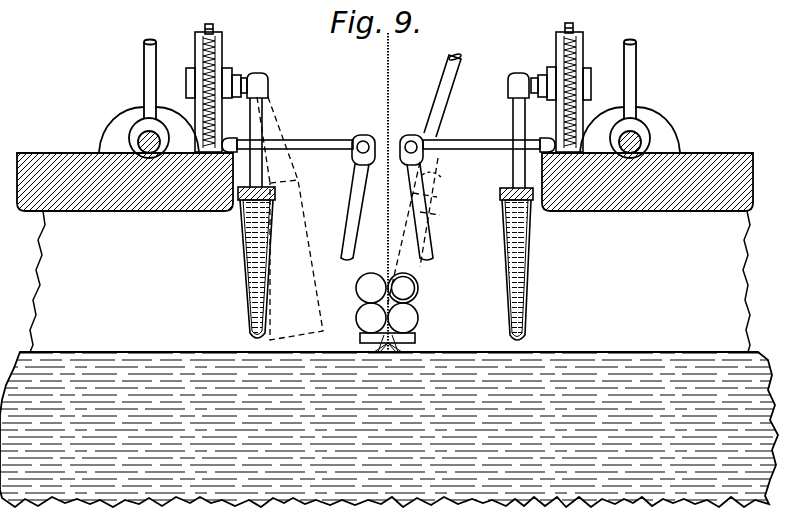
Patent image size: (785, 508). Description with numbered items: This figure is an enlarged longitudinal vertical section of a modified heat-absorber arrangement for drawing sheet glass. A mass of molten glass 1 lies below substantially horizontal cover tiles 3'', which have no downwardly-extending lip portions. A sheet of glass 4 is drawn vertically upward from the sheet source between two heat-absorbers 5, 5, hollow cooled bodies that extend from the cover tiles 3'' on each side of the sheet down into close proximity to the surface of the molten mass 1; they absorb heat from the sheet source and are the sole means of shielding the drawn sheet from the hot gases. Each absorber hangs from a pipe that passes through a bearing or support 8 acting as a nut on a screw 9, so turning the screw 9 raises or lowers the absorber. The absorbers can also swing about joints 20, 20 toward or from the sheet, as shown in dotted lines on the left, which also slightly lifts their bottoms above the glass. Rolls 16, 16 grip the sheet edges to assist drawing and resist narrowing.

The mass of molten glass 1 is at (633, 360).
The cover tiles 3'' is at (385, 200).
The sheet of glass 4 is at (390, 80).
The heat-absorber 5 is at (247, 285).
The bearing or support 8 is at (233, 72).
The screw 9 is at (214, 30).
The rolls 16 is at (358, 320).
The joint 20 is at (273, 75).